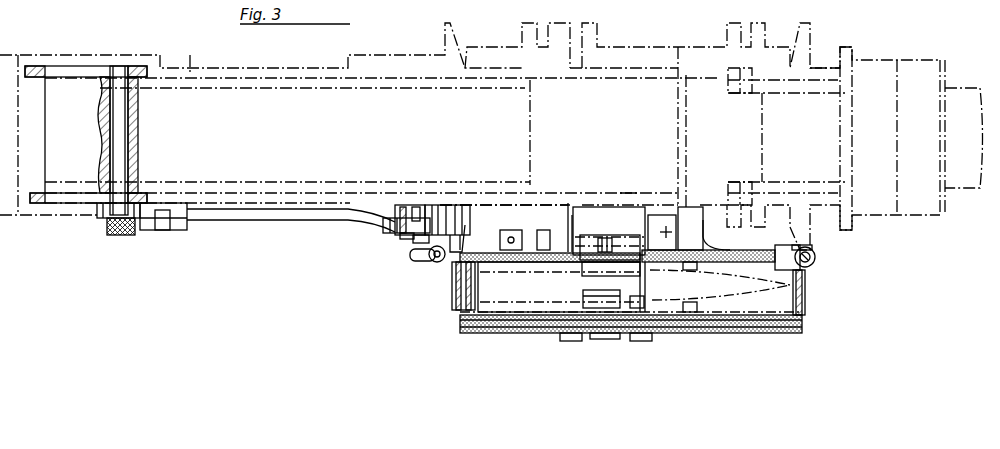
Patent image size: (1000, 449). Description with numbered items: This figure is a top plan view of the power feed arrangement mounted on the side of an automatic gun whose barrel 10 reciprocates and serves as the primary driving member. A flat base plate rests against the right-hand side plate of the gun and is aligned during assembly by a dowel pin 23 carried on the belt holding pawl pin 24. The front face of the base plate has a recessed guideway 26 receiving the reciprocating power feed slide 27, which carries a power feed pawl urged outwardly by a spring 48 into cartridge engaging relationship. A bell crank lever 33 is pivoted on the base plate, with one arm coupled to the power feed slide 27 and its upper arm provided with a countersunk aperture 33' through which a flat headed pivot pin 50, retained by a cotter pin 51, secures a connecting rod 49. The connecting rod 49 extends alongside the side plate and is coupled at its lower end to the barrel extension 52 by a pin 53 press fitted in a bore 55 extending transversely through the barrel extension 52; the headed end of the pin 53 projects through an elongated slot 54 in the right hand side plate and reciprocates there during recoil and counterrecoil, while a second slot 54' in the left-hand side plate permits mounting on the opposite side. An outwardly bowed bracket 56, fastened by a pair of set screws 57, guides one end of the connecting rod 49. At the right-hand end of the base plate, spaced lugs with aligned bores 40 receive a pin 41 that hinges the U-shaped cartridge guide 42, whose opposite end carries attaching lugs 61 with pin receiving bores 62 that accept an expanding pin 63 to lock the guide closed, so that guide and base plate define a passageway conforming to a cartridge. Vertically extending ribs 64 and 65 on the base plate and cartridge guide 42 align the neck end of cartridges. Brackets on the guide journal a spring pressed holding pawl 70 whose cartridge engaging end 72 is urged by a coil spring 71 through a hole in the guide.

The barrel 10 is at (958, 94).
The dowel pin 23 is at (513, 232).
The belt holding pawl pin 24 is at (666, 230).
The recessed guideway 26 is at (567, 232).
The power feed slide 27 is at (586, 226).
The bell crank lever 33 is at (431, 211).
The countersunk aperture 33' is at (416, 201).
The aligned bores 40 is at (816, 259).
The pin 41 is at (815, 254).
The cartridge guide 42 is at (750, 333).
The spring 48 is at (606, 238).
The connecting rod 49 is at (297, 221).
The flat headed pivot pin 50 is at (414, 241).
The cotter pin 51 is at (400, 237).
The barrel extension 52 is at (191, 70).
The pin 53 is at (128, 111).
The elongated slot 54 is at (88, 156).
The second slot 54' is at (86, 57).
The bore 55 is at (138, 153).
The outwardly bowed bracket 56 is at (186, 226).
The set screws 57 is at (145, 230).
The attaching lugs 61 is at (458, 270).
The pin receiving bores 62 is at (433, 262).
The expanding pin 63 is at (417, 258).
The rib 64 is at (690, 270).
The rib 65 is at (695, 305).
The holding pawl 70 is at (640, 300).
The coil spring 71 is at (606, 339).
The cartridge engaging end 72 is at (583, 296).